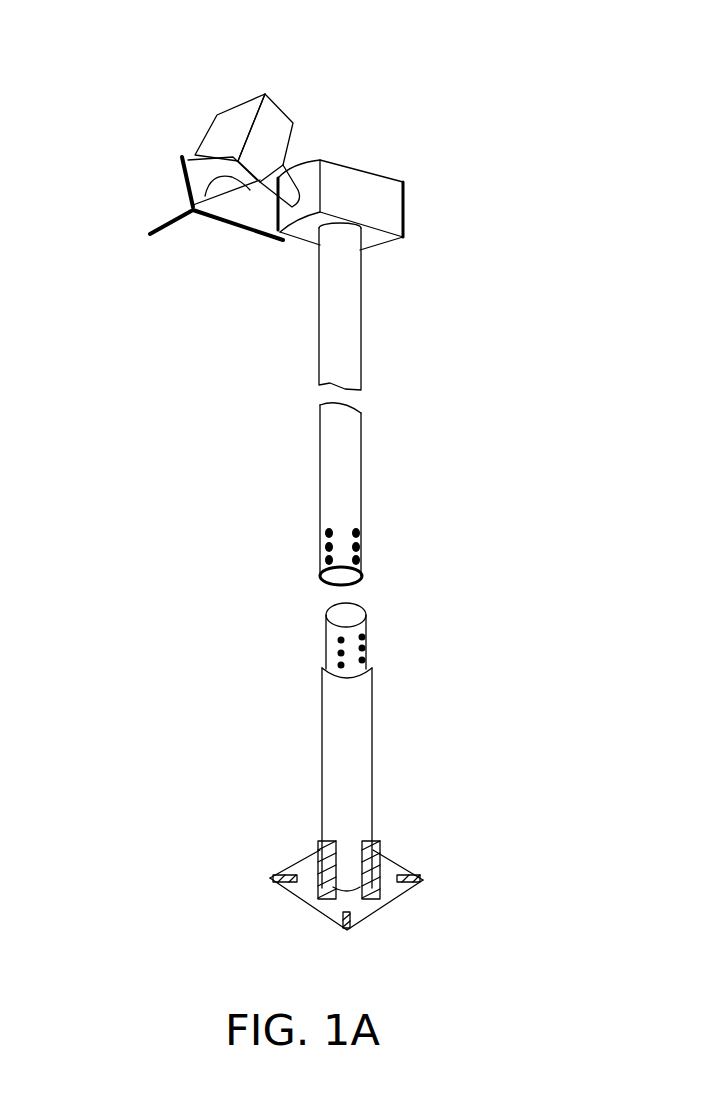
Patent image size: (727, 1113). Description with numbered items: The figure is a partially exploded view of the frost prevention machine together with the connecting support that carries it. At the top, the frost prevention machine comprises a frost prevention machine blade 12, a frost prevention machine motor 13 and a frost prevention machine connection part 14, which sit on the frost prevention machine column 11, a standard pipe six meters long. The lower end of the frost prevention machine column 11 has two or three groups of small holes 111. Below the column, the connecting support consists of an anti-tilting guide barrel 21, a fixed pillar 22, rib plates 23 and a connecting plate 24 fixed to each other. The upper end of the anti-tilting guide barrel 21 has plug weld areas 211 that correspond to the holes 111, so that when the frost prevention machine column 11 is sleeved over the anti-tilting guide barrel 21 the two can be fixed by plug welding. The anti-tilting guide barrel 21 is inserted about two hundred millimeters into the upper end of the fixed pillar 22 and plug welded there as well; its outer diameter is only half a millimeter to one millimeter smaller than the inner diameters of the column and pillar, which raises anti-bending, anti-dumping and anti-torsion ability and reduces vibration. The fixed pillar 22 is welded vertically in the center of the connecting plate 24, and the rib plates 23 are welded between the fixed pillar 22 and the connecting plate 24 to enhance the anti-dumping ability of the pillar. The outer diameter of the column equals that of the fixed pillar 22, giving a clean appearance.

The frost prevention machine column 11 is at (338, 425).
The small holes 111 is at (367, 528).
The frost prevention machine blade 12 is at (180, 213).
The frost prevention machine motor 13 is at (273, 115).
The frost prevention machine connection part 14 is at (373, 200).
The anti-tilting guide barrel 21 is at (328, 643).
The plug weld areas 211 is at (367, 643).
The fixed pillar 22 is at (353, 767).
The rib plate 23 is at (320, 865).
The connecting plate 24 is at (393, 872).